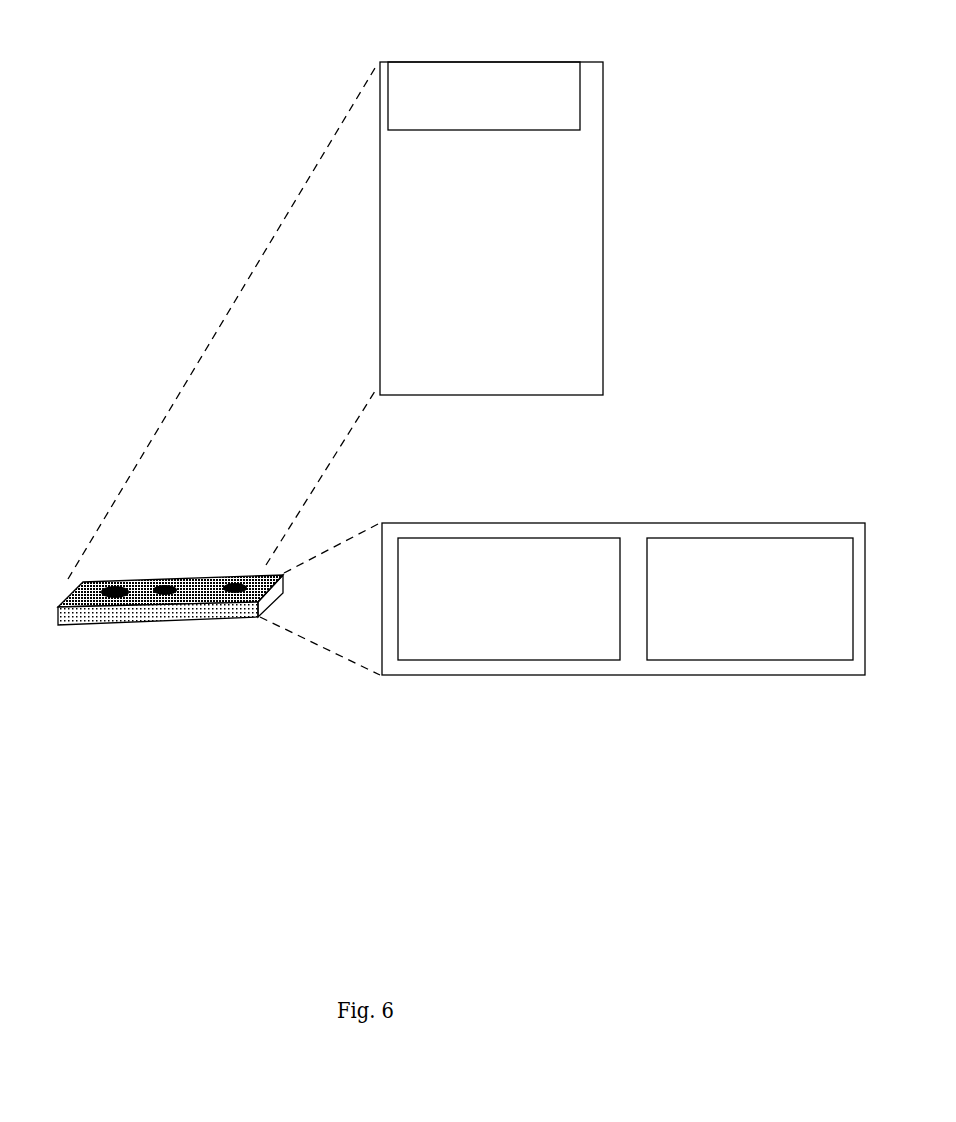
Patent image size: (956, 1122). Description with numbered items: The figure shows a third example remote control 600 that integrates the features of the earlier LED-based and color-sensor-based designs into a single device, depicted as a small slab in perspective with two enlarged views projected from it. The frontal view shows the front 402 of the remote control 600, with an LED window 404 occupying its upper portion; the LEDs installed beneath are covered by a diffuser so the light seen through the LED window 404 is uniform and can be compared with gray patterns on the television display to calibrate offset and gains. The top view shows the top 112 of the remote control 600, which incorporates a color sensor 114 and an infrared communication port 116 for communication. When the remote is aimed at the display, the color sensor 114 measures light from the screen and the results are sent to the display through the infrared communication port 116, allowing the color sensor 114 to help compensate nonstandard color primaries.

The front 402 is at (603, 298).
The LED window 404 is at (580, 112).
The top 112 is at (623, 599).
The color sensor 114 is at (470, 540).
The infrared communication port 116 is at (717, 540).
The remote control 600 is at (128, 674).